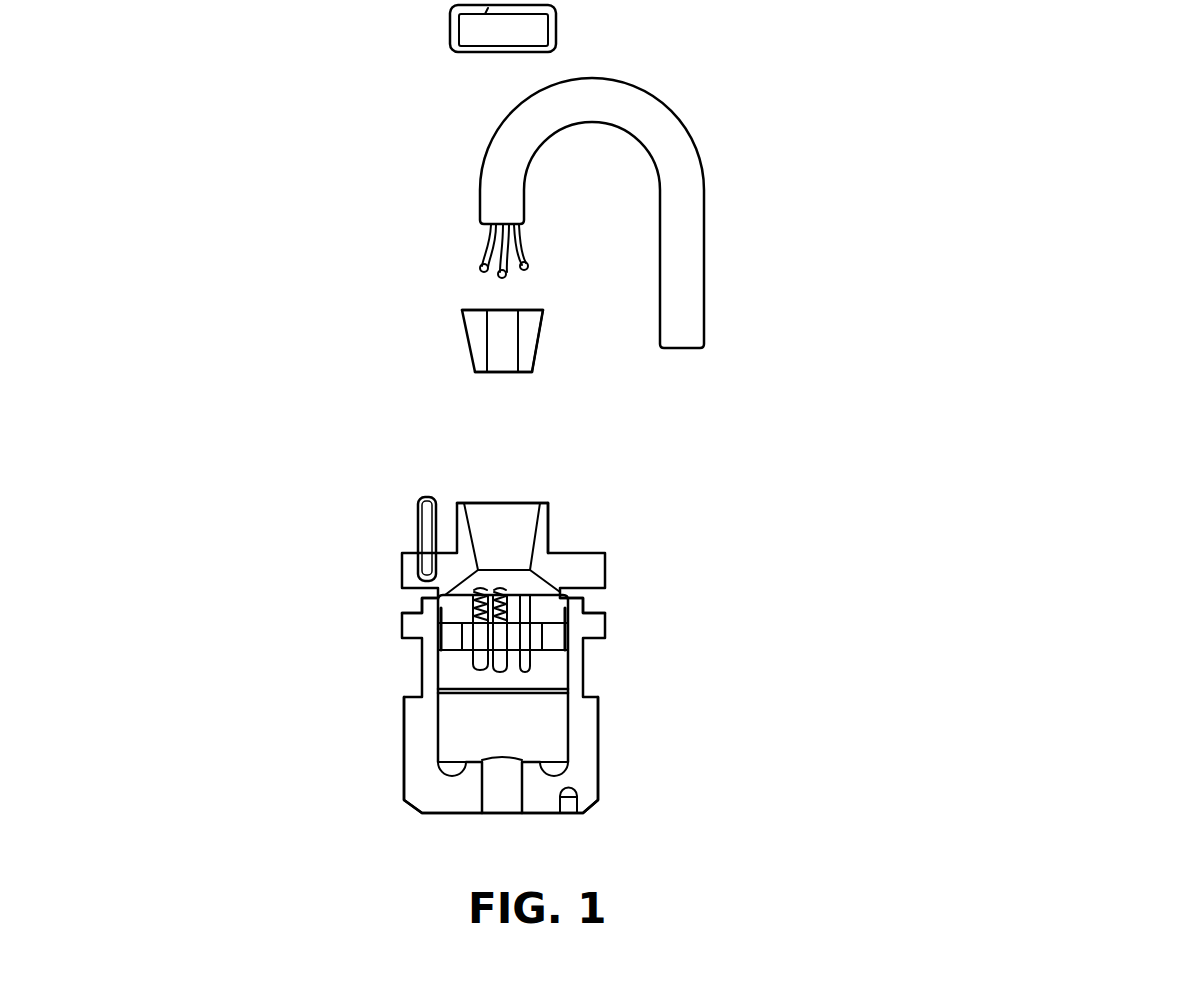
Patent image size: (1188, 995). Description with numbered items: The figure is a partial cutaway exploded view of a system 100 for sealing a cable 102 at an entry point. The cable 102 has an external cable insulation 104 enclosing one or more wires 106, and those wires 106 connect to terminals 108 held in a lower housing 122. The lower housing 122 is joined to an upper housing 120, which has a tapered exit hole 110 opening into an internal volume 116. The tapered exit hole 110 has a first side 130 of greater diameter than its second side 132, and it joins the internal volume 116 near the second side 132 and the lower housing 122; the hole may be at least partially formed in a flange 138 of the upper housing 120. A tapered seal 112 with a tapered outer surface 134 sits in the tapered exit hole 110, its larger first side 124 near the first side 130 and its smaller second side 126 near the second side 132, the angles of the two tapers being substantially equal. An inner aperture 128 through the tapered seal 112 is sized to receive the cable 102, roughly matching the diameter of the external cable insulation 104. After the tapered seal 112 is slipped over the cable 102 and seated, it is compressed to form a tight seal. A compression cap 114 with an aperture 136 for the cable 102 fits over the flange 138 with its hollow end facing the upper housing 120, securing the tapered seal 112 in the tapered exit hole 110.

The system 100 is at (1058, 90).
The cable 102 is at (624, 70).
The external cable insulation 104 is at (690, 212).
The wires 106 is at (487, 253).
The terminals 108 is at (473, 600).
The tapered exit hole 110 is at (546, 540).
The tapered seal 112 is at (477, 345).
The compression cap 114 is at (450, 30).
The internal volume 116 is at (560, 590).
The upper housing 120 is at (605, 570).
The lower housing 122 is at (598, 752).
The first side of the tapered seal 124 is at (507, 310).
The second side of the tapered seal 126 is at (523, 372).
The inner aperture 128 is at (502, 360).
The first side of the tapered exit hole 130 is at (483, 503).
The second side of the tapered exit hole 132 is at (515, 570).
The tapered outer surface 134 is at (533, 355).
The aperture 136 is at (491, 6).
The flange 138 is at (548, 508).